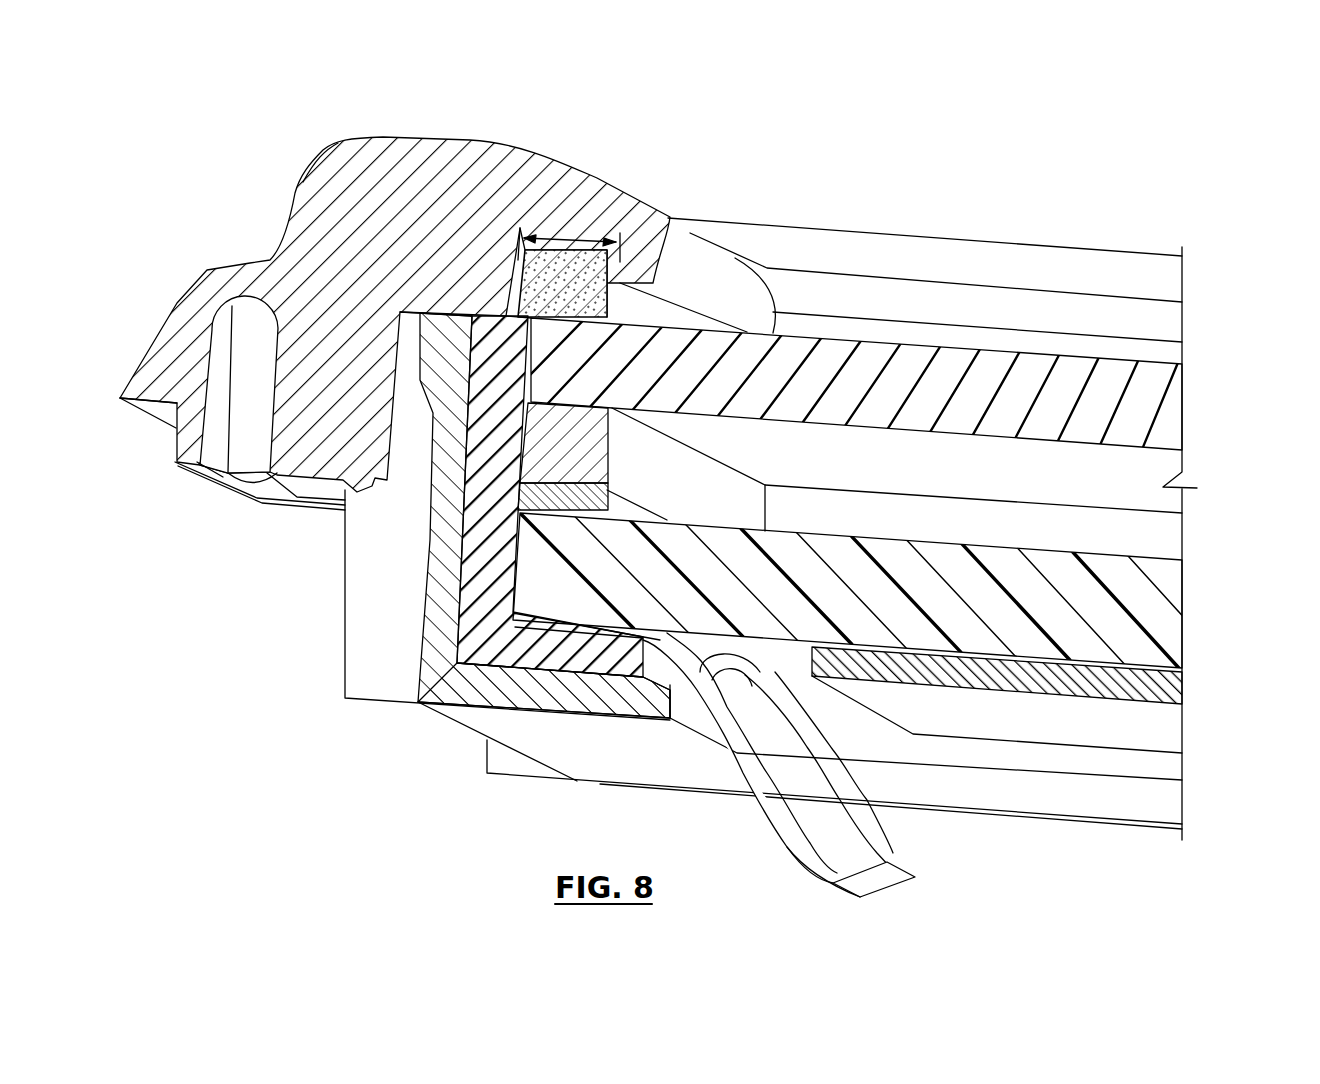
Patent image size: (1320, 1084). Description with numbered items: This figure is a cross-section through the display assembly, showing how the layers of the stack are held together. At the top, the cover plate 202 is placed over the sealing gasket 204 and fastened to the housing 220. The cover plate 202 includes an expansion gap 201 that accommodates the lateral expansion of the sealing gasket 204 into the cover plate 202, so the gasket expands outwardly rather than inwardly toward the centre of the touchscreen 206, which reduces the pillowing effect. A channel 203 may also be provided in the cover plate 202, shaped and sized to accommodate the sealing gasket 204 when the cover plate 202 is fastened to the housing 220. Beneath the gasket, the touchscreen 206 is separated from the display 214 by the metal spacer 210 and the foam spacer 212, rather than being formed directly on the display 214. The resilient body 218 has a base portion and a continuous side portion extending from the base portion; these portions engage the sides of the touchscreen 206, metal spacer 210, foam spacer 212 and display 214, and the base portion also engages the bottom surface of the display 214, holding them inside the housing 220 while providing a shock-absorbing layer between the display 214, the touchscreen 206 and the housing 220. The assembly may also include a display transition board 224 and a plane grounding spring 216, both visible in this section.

The expansion gap 201 is at (483, 262).
The cover plate 202 is at (383, 193).
The channel 203 is at (570, 242).
The sealing gasket 204 is at (600, 278).
The touchscreen 206 is at (1128, 402).
The metal spacer 210 is at (543, 442).
The foam spacer 212 is at (553, 495).
The display 214 is at (1157, 615).
The plane grounding spring 216 is at (800, 823).
The resilient body 218 is at (467, 637).
The housing 220 is at (484, 690).
The display transition board 224 is at (1115, 693).